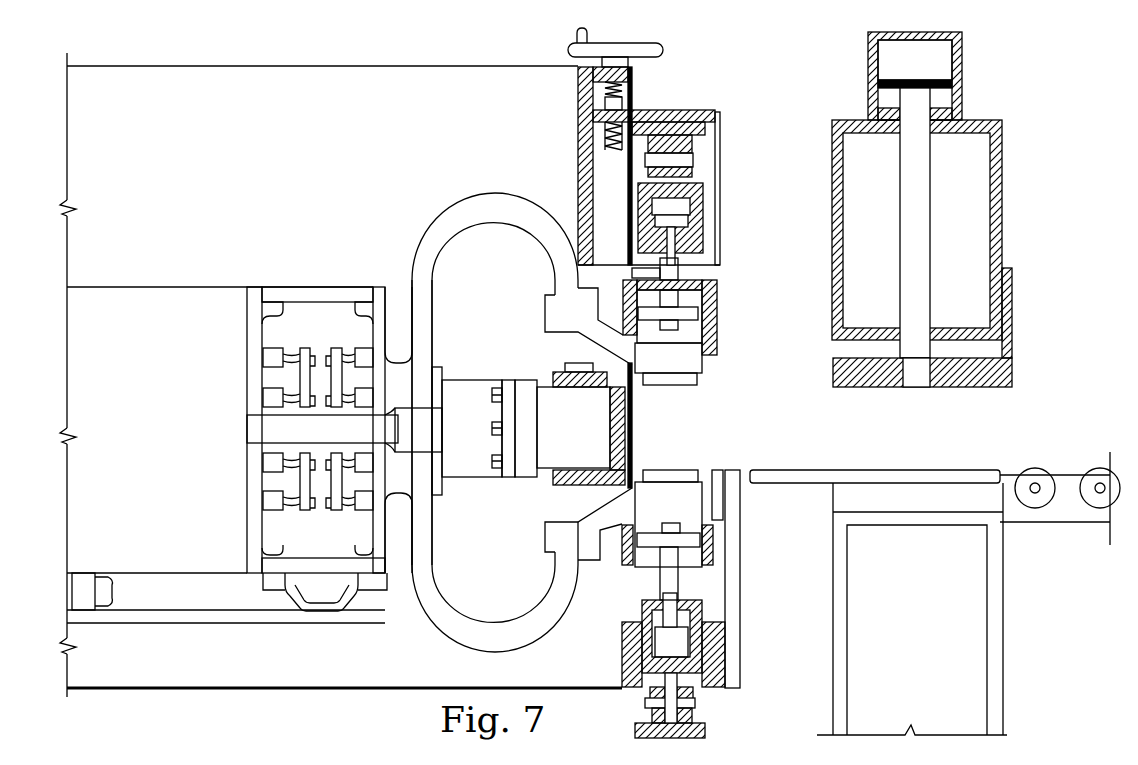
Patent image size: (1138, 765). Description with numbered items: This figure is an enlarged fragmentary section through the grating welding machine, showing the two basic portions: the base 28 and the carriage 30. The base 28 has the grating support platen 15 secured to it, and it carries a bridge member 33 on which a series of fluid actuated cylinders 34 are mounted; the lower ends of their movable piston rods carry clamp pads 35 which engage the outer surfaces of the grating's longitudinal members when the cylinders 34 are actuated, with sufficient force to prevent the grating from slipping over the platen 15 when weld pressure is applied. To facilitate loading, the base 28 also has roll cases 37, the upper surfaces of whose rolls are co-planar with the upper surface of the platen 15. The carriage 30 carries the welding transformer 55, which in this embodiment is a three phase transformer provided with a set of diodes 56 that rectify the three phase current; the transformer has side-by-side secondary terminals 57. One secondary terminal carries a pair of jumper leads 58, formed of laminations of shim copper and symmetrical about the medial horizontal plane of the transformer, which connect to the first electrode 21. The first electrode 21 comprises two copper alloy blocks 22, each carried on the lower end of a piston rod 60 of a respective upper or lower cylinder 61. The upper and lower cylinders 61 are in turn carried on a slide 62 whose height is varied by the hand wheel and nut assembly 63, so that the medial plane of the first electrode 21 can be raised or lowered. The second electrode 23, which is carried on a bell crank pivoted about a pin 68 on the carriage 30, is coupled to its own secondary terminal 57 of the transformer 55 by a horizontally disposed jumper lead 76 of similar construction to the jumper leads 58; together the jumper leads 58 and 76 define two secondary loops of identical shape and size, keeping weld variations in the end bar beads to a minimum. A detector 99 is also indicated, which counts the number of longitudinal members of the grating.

The grating support platen 15 is at (775, 472).
The first electrode 21 is at (693, 360).
The copper alloy blocks 22 is at (665, 378).
The second electrode 23 is at (622, 428).
The base 28 is at (1005, 634).
The carriage 30 is at (125, 686).
The bridge member 33 is at (838, 285).
The fluid actuated cylinders 34 is at (962, 60).
The clamp pads 35 is at (950, 380).
The roll cases 37 is at (1068, 466).
The welding transformer 55 is at (185, 296).
The diodes 56 is at (265, 397).
The secondary terminals 57 is at (392, 500).
The jumper leads 58 is at (497, 193).
The piston rods 60 is at (670, 272).
The upper and lower cylinders 61 is at (697, 203).
The slide 62 is at (585, 165).
The hand wheel and nut assembly 63 is at (625, 92).
The pin 68 is at (580, 365).
The jumper lead 76 is at (458, 388).
The detector 99 is at (718, 505).